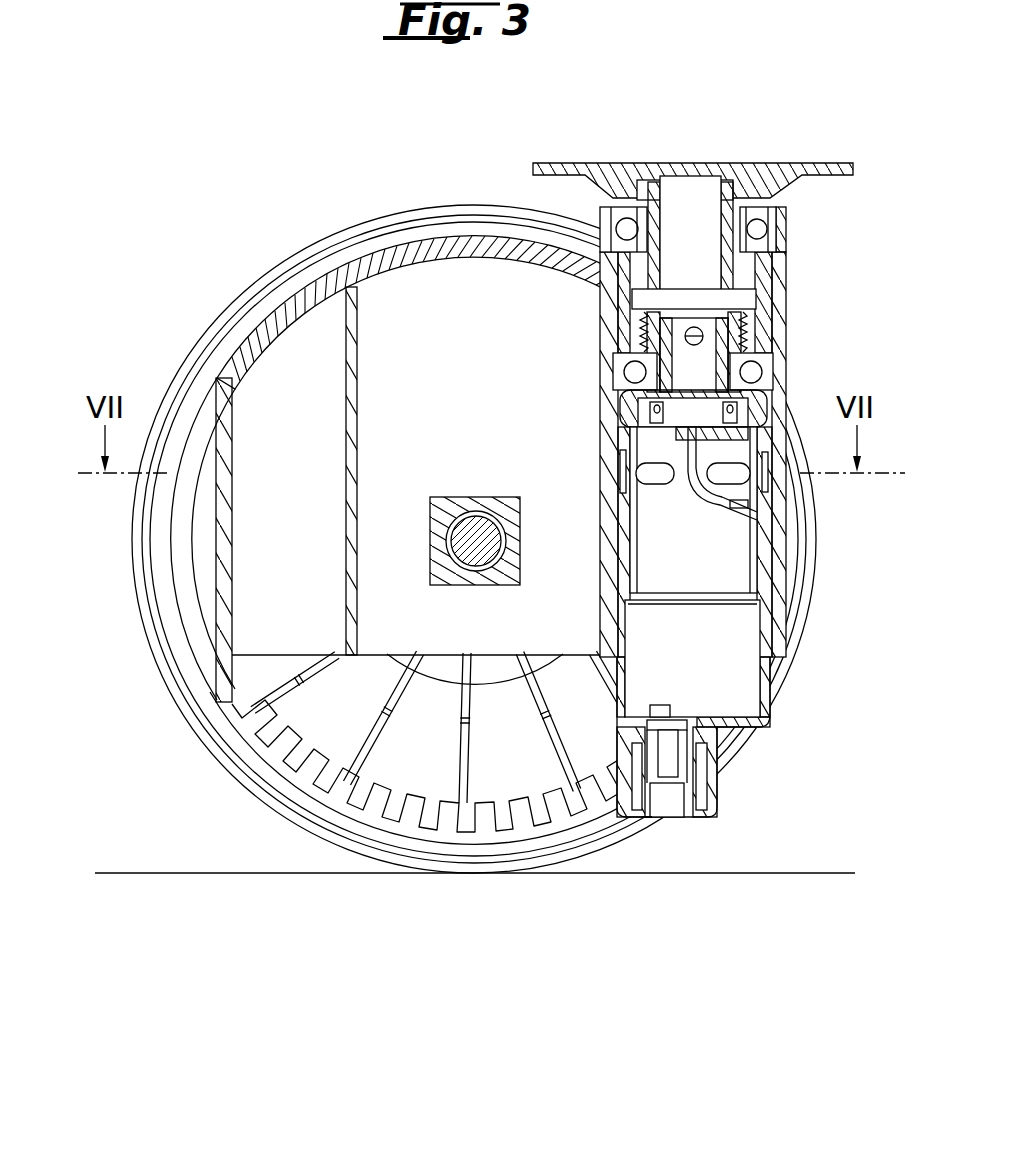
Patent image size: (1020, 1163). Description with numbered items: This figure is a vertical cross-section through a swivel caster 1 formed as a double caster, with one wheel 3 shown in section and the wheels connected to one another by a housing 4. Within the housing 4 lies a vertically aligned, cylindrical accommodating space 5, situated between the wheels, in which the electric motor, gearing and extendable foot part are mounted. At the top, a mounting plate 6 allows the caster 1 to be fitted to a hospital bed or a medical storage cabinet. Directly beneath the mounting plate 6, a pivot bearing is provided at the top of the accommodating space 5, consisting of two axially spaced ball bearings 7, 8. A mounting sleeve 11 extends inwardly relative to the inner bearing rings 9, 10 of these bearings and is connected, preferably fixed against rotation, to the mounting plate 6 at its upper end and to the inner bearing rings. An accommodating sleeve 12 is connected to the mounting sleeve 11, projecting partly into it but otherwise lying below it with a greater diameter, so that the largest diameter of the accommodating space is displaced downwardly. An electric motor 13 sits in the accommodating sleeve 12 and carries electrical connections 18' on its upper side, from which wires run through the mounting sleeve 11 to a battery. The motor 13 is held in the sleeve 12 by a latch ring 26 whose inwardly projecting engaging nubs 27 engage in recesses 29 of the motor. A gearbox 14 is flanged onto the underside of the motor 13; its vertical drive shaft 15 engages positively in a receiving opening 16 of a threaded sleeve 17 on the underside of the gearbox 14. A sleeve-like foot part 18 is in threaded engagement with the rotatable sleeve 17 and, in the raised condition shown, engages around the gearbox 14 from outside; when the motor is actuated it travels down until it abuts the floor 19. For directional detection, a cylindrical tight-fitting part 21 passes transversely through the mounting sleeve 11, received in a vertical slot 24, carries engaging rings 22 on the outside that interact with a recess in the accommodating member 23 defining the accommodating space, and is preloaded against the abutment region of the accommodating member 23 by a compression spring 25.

The swivel caster 1 is at (334, 166).
The wheel 3 is at (252, 786).
The housing 4 is at (495, 634).
The accommodating space 5 is at (771, 361).
The mounting plate 6 is at (826, 167).
The bearing 7 is at (616, 371).
The bearing 8 is at (617, 216).
The inner bearing ring 9 is at (648, 215).
The inner bearing ring 10 is at (648, 382).
The mounting sleeve 11 is at (731, 215).
The accommodating sleeve 12 is at (627, 531).
The electric motor 13 is at (648, 572).
The gearbox 14 is at (648, 627).
The drive shaft 15 is at (668, 755).
The receiving opening 16 is at (671, 815).
The threaded sleeve 17 is at (647, 833).
The foot part 18 is at (708, 741).
The electrical connections 18' is at (647, 432).
The floor 19 is at (823, 872).
The tight-fitting part 21 is at (732, 296).
The engaging rings 22 is at (752, 311).
The accommodating member 23 is at (777, 326).
The slot 24 is at (642, 315).
The compression spring 25 is at (641, 331).
The latch ring 26 is at (765, 478).
The engaging nubs 27 is at (745, 483).
The recesses 29 is at (637, 478).